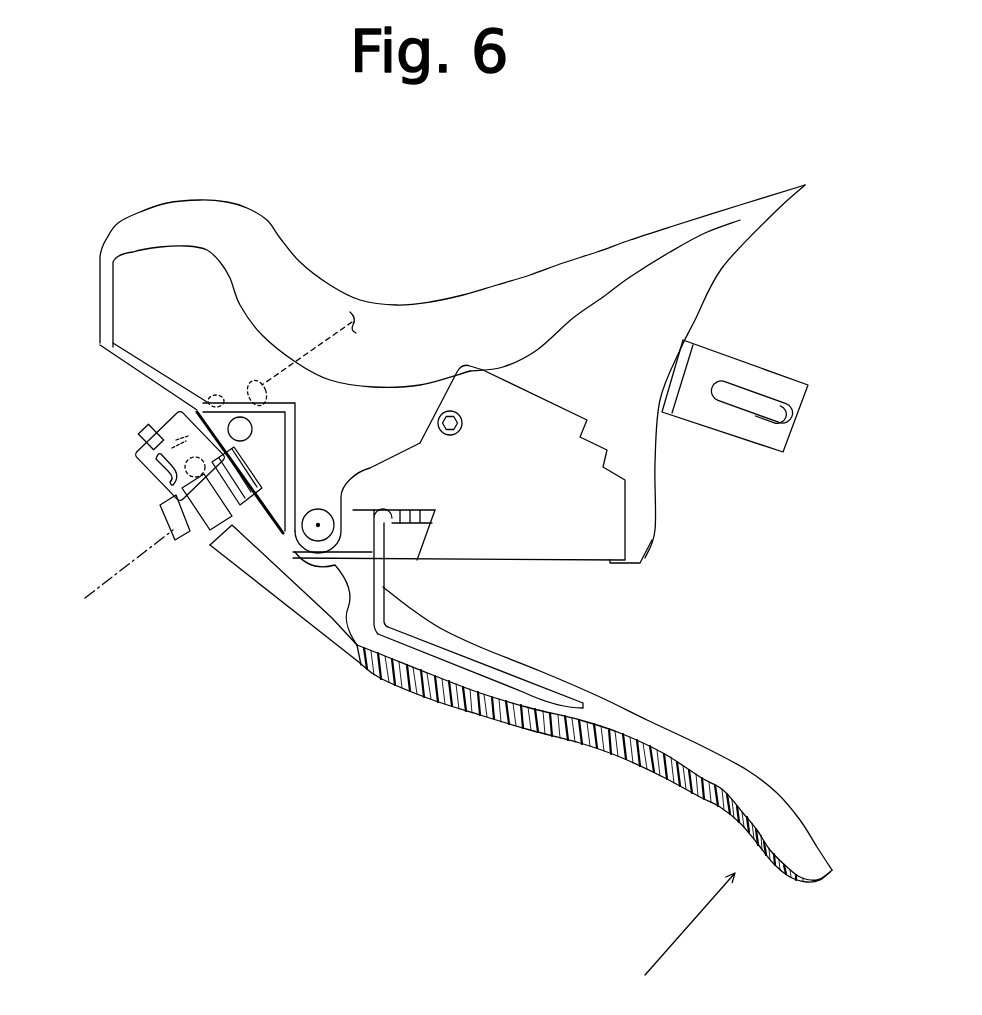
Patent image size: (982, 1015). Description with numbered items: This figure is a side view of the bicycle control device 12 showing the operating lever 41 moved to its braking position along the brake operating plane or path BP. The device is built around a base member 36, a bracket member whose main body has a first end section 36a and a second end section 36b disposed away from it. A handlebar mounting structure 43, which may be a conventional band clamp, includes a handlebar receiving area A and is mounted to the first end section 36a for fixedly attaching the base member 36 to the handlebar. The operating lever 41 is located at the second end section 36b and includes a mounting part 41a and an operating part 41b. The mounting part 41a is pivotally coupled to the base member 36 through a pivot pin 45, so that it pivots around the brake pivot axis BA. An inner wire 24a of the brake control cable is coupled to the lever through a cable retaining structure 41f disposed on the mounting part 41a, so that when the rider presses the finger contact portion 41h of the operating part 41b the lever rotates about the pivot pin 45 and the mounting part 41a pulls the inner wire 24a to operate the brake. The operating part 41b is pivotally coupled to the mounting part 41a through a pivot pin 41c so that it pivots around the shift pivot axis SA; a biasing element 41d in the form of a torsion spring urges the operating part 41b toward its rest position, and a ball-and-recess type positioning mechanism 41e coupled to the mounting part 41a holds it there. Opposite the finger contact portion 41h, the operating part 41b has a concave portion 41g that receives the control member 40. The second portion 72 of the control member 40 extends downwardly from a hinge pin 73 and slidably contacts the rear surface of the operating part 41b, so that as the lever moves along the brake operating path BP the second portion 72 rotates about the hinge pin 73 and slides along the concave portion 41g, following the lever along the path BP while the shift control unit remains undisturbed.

The bicycle control device 12 is at (129, 194).
The base member 36 is at (448, 290).
The first end section 36a is at (673, 287).
The second end section 36b is at (182, 370).
The handlebar mounting structure 43 is at (758, 355).
The handlebar receiving area A is at (724, 450).
The inner wire 24a is at (356, 335).
The operating lever 41 is at (375, 679).
The mounting part 41a is at (213, 398).
The operating part 41b is at (242, 562).
The pivot pin 41c is at (170, 530).
The biasing element 41d is at (160, 479).
The ball-and-recess type positioning mechanism 41e is at (143, 430).
The cable retaining structure 41f is at (244, 393).
The concave portion 41g is at (608, 720).
The finger contact portion 41h is at (520, 728).
The pivot pin 45 is at (317, 513).
The brake pivot axis BA is at (318, 525).
The shift pivot axis SA is at (110, 580).
The control member 40 is at (437, 666).
The hinge pin 73 is at (378, 513).
The second portion 72 is at (490, 673).
The brake operating plane or path BP is at (662, 950).